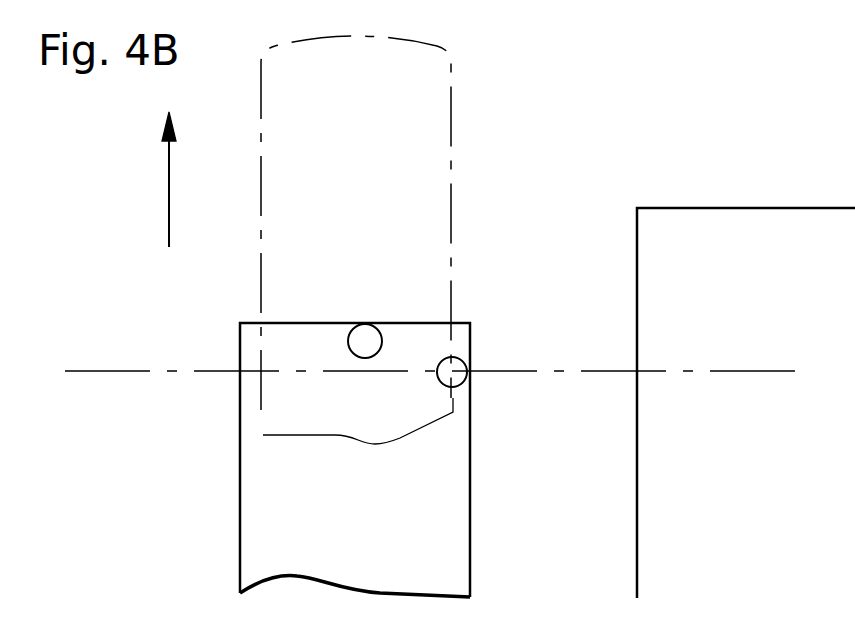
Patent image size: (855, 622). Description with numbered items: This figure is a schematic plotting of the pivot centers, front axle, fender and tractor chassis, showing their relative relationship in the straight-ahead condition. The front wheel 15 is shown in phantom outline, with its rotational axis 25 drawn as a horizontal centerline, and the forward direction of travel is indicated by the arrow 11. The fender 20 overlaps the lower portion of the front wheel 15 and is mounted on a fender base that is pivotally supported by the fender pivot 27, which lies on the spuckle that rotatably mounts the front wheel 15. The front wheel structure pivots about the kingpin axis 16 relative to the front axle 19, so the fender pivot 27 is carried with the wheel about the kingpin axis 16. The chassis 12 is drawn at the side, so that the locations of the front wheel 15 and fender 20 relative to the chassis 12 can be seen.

The arrow 11 is at (168, 199).
The chassis 12 is at (688, 208).
The front wheel 15 is at (452, 88).
The kingpin axis 16 is at (470, 345).
The front axle 19 is at (593, 371).
The fender 20 is at (463, 502).
The rotational axis 25 is at (108, 371).
The fender pivot 27 is at (382, 334).